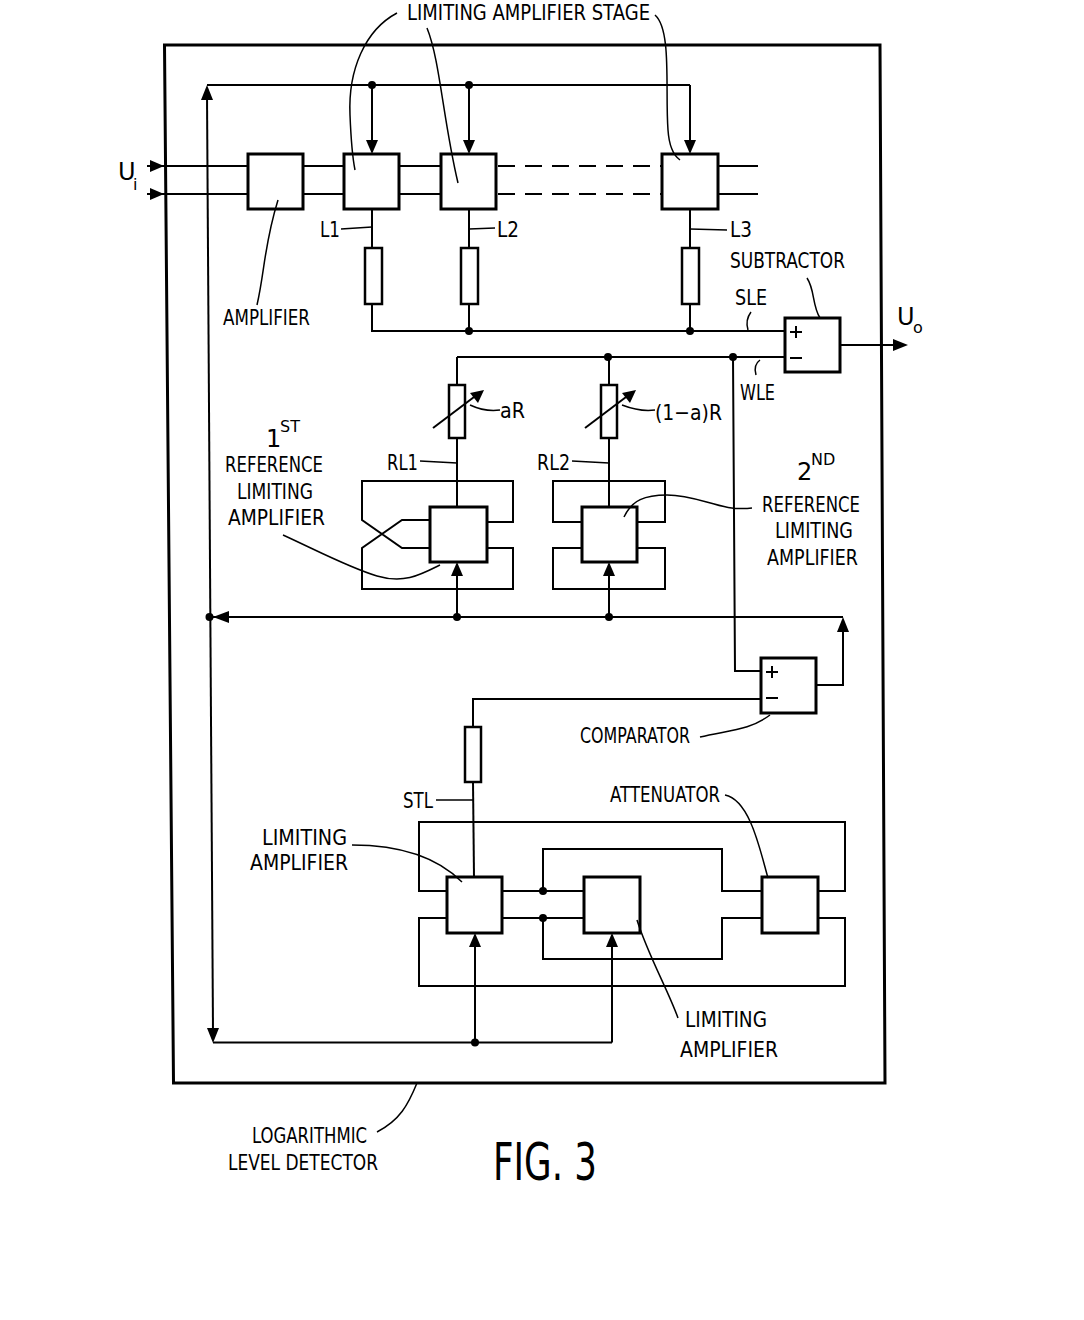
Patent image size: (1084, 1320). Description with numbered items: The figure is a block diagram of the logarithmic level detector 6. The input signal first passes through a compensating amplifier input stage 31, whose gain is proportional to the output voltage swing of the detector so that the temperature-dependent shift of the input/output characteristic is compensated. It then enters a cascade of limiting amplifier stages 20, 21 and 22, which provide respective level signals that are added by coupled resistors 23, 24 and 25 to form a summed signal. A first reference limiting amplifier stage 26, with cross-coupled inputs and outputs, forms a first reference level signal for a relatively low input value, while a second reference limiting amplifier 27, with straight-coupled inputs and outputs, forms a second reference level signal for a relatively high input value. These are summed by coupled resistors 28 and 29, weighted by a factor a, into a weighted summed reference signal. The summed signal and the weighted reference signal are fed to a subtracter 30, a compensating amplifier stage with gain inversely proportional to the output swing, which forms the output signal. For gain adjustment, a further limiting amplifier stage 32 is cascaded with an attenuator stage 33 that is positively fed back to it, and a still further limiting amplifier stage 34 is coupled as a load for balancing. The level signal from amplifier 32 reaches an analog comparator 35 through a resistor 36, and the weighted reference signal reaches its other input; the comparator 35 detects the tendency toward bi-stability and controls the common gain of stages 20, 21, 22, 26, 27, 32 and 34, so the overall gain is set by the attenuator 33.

The logarithmic level detector 6 is at (797, 1083).
The compensating amplifier input stage 31 is at (267, 153).
The limiting amplifier stage 20 is at (392, 153).
The limiting amplifier stage 21 is at (487, 153).
The limiting amplifier stage 22 is at (707, 153).
The coupled resistor 23 is at (365, 281).
The coupled resistor 24 is at (479, 283).
The coupled resistor 25 is at (682, 278).
The coupled resistor 28 is at (449, 397).
The coupled resistor 29 is at (601, 395).
The first reference limiting amplifier stage 26 is at (430, 513).
The second reference limiting amplifier 27 is at (640, 532).
The subtracter 30 is at (815, 372).
The analog comparator 35 is at (790, 715).
The resistor 36 is at (483, 757).
The further limiting amplifier stage 32 is at (447, 905).
The attenuator stage 33 is at (778, 877).
The still further limiting amplifier stage 34 is at (640, 900).